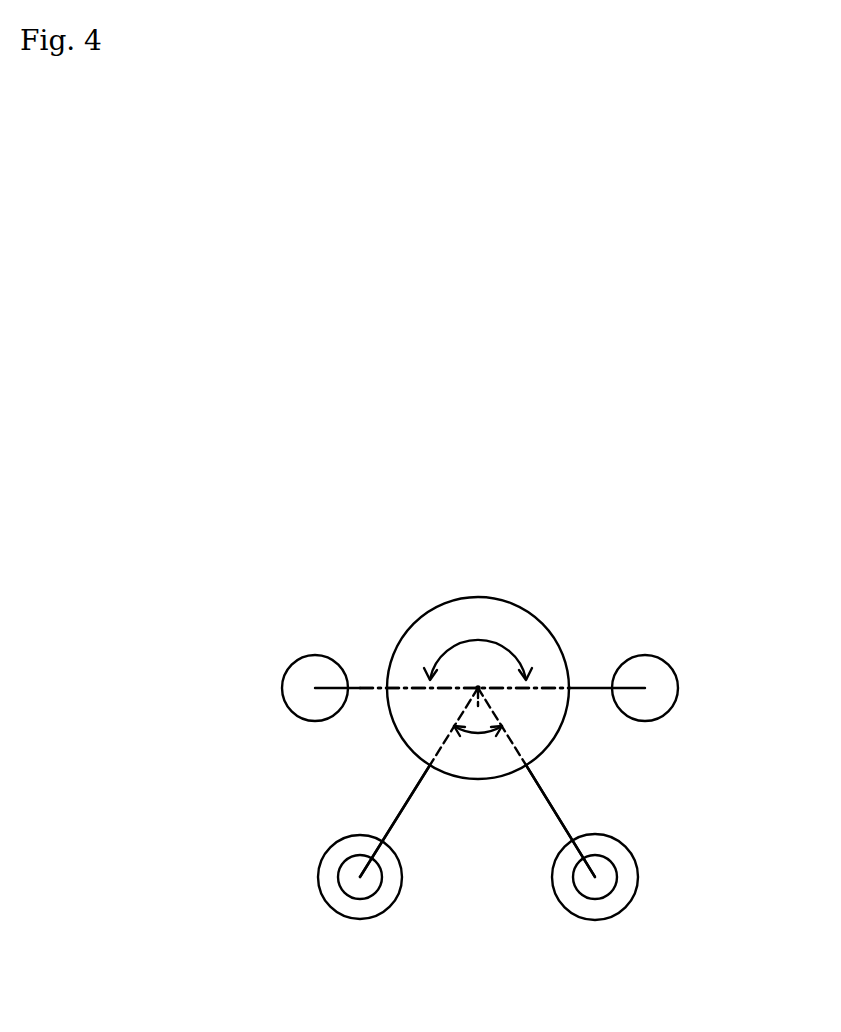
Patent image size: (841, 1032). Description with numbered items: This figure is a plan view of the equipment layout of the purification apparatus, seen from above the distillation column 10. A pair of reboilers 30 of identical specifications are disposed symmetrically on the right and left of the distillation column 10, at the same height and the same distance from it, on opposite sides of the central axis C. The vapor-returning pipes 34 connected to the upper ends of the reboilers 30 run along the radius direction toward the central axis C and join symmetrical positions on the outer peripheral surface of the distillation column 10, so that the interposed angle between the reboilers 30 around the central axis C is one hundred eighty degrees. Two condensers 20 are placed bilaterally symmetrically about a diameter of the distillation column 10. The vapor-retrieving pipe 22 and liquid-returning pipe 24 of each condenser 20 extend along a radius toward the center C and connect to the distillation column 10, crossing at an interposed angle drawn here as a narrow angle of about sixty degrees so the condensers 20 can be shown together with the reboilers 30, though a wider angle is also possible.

The distillation column 10 is at (540, 727).
The vapor-returning pipe 34 is at (368, 687).
The reboiler 30 is at (297, 680).
The vapor-retrieving pipe 22 is at (558, 818).
The liquid-returning pipe 24 is at (477, 821).
The condenser 20 is at (377, 918).
The central axis C is at (478, 690).